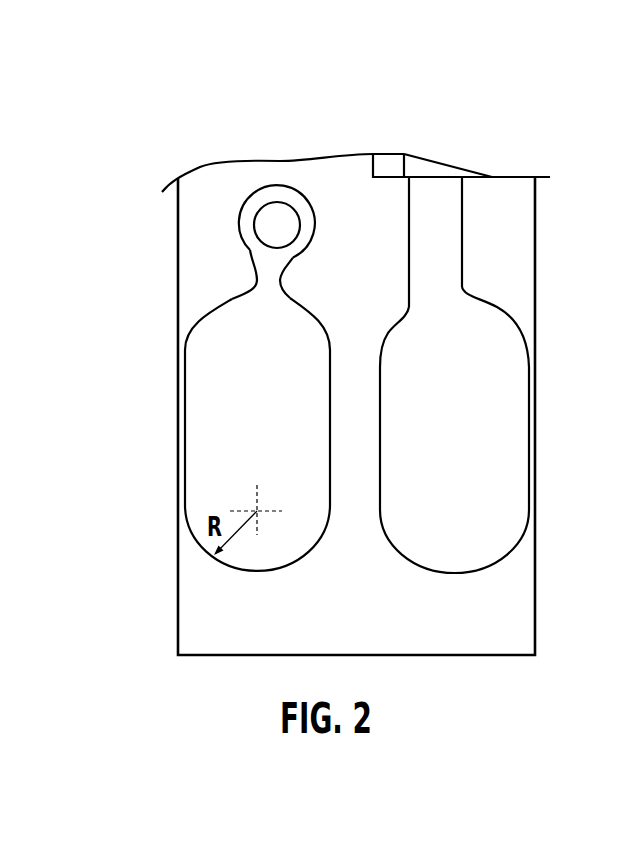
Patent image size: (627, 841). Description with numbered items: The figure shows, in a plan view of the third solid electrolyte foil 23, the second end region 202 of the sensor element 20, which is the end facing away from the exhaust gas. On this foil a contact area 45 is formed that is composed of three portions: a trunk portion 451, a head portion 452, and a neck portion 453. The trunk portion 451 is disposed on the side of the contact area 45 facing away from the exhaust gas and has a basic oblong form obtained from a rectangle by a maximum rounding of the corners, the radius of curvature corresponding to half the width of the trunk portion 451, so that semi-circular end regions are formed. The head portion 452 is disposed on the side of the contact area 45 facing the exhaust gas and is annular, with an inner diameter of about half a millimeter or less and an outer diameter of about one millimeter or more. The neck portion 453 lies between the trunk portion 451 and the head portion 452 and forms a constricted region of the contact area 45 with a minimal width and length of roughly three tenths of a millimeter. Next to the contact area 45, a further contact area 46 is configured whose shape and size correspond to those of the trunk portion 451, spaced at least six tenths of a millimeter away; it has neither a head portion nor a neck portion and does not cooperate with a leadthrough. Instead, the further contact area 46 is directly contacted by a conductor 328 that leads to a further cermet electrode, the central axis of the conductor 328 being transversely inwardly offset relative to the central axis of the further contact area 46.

The sensor element 20 is at (371, 130).
The third solid electrolyte foil 23 is at (371, 130).
The second end region 202 is at (448, 158).
The head portion 452 is at (248, 213).
The neck portion 453 is at (267, 274).
The contact area 45 is at (220, 434).
The trunk portion 451 is at (200, 425).
The conductor 328 is at (450, 253).
The further contact area 46 is at (502, 405).